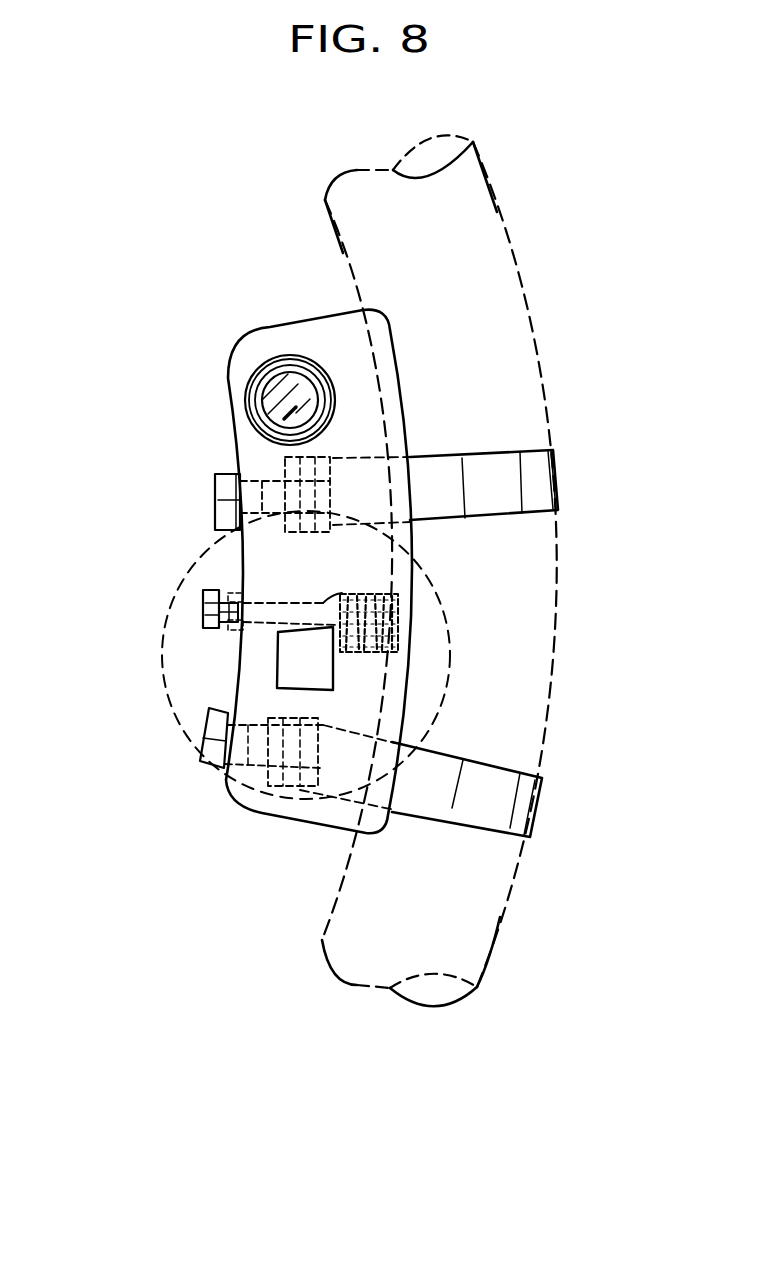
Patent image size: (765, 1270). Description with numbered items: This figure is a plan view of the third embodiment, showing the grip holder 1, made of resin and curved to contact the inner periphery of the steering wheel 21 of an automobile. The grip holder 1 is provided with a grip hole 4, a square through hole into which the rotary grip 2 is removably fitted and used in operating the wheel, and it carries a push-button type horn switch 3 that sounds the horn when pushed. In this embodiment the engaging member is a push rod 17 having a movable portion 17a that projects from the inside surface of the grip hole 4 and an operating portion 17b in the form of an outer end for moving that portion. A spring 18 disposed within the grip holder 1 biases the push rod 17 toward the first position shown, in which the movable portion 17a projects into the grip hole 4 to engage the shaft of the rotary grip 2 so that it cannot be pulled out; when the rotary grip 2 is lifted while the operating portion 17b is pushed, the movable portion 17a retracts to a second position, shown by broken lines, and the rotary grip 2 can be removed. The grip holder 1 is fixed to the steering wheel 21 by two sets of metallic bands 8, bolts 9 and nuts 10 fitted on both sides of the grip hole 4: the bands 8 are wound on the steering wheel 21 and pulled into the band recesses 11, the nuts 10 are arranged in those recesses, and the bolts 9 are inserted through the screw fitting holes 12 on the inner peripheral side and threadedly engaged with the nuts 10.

The grip holder 1 is at (258, 330).
The rotary grip 2 is at (177, 720).
The horn switch 3 is at (270, 383).
The grip hole 4 is at (290, 660).
The bands 8 is at (558, 475).
The bolts 9 is at (215, 498).
The nuts 10 is at (330, 463).
The band recesses 11 is at (400, 445).
The screw fitting holes 12 is at (262, 472).
The push rod 17 is at (202, 603).
The movable portion 17a is at (338, 630).
The operating portion 17b is at (203, 630).
The spring 18 is at (415, 618).
The steering wheel 21 is at (490, 178).